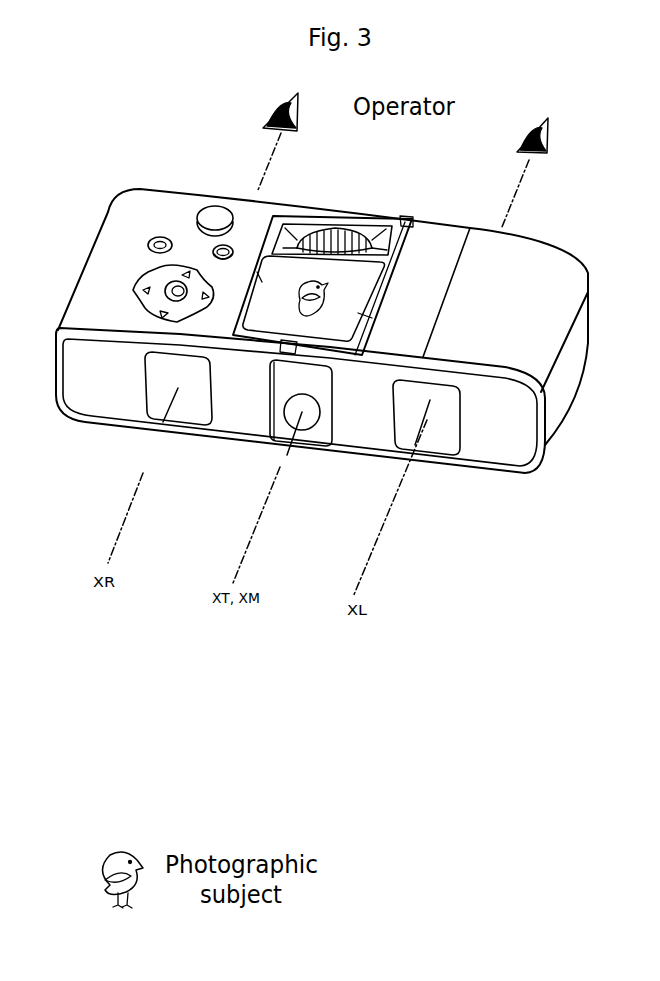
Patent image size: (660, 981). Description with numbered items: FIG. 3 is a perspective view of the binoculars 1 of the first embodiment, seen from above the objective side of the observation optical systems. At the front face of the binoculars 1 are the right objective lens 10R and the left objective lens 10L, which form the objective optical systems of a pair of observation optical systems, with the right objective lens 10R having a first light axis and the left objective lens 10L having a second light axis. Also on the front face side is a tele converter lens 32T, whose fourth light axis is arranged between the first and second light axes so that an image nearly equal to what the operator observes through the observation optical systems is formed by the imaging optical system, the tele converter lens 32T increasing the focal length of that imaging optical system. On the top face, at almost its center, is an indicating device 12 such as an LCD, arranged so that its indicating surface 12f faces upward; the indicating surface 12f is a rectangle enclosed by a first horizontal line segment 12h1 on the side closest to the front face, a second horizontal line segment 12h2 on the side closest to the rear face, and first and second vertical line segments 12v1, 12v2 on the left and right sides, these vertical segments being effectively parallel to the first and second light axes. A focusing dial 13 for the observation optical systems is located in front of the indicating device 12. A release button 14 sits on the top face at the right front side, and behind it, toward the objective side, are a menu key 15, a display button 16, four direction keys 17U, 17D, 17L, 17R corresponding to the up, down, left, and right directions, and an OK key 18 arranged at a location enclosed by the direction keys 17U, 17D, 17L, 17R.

The binoculars 1 is at (573, 246).
The right objective lens 10R is at (188, 412).
The left objective lens 10L is at (437, 446).
The indicating device 12 is at (382, 281).
The indicating surface 12f is at (357, 292).
The first horizontal line segment 12h1 is at (290, 347).
The second horizontal line segment 12h2 is at (418, 193).
The first vertical line segment 12v1 is at (366, 316).
The second vertical line segment 12v2 is at (260, 280).
The focusing dial 13 is at (330, 227).
The release button 14 is at (213, 206).
The menu key 15 is at (231, 243).
The display button 16 is at (165, 237).
The down direction key 17D is at (178, 263).
The left direction key 17L is at (212, 297).
The right direction key 17R is at (148, 289).
The up direction key 17U is at (153, 317).
The OK key 18 is at (172, 290).
The tele converter lens 32T is at (298, 430).